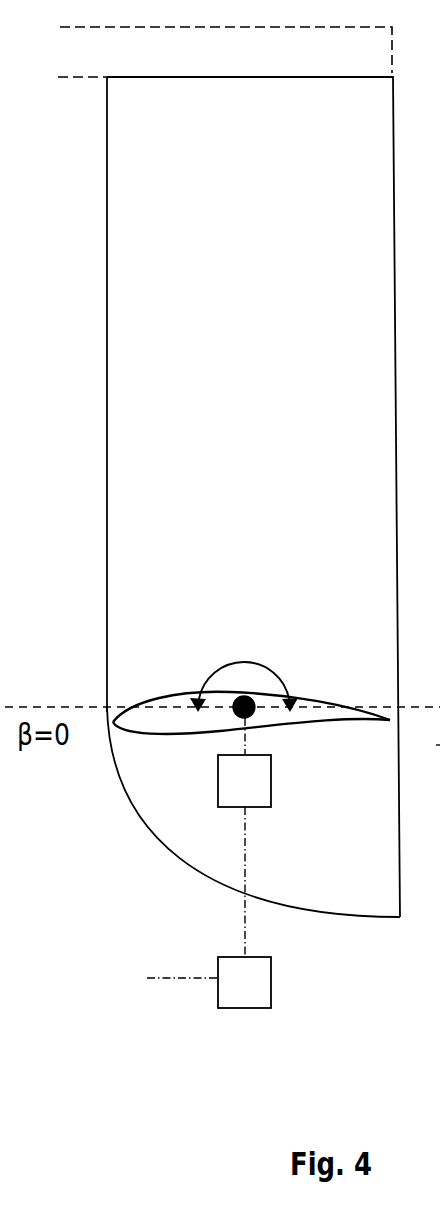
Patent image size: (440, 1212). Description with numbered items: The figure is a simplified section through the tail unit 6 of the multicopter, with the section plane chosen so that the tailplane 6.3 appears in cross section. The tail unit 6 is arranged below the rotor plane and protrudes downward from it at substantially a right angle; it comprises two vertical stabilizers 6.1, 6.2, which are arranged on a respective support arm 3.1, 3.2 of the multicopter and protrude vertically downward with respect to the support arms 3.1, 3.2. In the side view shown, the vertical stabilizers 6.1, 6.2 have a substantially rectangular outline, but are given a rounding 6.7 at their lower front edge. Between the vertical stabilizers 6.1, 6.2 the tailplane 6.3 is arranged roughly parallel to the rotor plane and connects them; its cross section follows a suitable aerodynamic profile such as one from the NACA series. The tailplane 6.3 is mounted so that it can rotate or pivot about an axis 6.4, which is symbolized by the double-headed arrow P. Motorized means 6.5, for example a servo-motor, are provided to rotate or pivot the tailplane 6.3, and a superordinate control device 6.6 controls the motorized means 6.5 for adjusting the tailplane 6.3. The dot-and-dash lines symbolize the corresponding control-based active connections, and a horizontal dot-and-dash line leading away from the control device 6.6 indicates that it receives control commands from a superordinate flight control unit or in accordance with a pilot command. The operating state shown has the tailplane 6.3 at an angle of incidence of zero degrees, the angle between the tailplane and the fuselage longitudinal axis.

The support arm 3.1 is at (215, 54).
The support arm 3.2 is at (207, 472).
The tail unit 6 is at (122, 963).
The vertical stabilizer 6.1 is at (150, 502).
The vertical stabilizer 6.2 is at (63, 394).
The tailplane 6.3 is at (153, 721).
The axis 6.4 is at (243, 697).
The motorized means 6.5 is at (238, 793).
The control device 6.6 is at (240, 982).
The rounding 6.7 is at (142, 817).
The double-headed arrow P is at (272, 672).